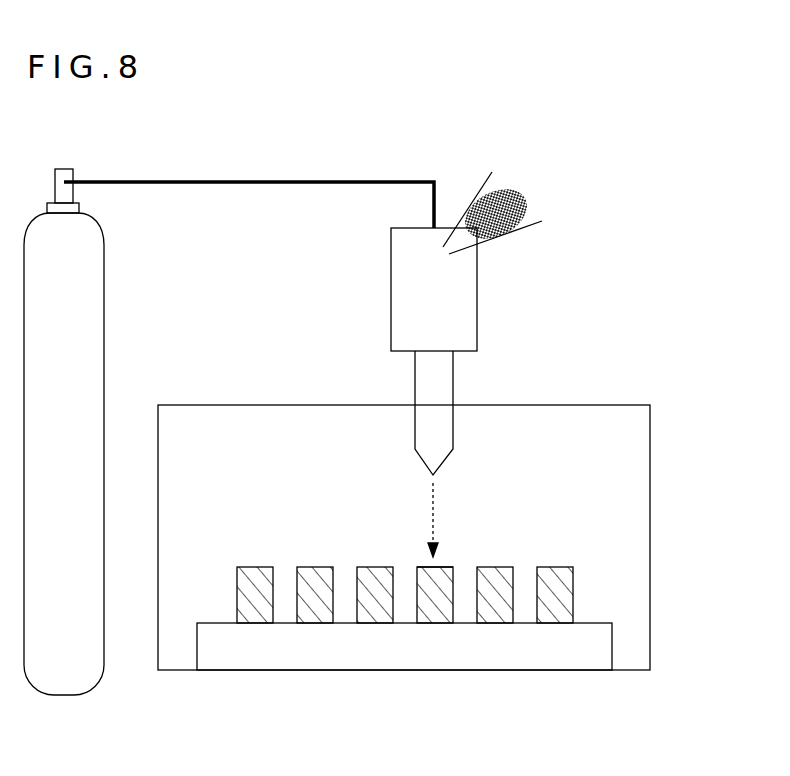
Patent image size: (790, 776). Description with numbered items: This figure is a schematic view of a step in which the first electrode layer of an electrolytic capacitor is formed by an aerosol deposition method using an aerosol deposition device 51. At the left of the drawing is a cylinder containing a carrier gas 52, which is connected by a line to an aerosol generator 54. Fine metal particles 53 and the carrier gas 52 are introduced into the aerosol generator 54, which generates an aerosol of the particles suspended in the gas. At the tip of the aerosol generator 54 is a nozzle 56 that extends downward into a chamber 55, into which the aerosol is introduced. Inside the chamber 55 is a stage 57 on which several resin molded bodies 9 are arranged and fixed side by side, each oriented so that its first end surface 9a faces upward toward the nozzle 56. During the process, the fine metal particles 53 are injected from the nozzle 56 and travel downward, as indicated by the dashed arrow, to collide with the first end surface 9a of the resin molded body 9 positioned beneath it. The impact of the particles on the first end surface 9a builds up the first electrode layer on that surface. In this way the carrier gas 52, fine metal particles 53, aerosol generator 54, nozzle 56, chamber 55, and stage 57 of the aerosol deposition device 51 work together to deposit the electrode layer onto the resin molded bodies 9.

The aerosol deposition device 51 is at (609, 194).
The carrier gas 52 is at (65, 673).
The fine metal particles 53 is at (513, 203).
The aerosol generator 54 is at (465, 302).
The chamber 55 is at (632, 484).
The nozzle 56 is at (433, 450).
The stage 57 is at (525, 653).
The resin molded body 9 is at (433, 603).
The first end surface 9a is at (425, 563).